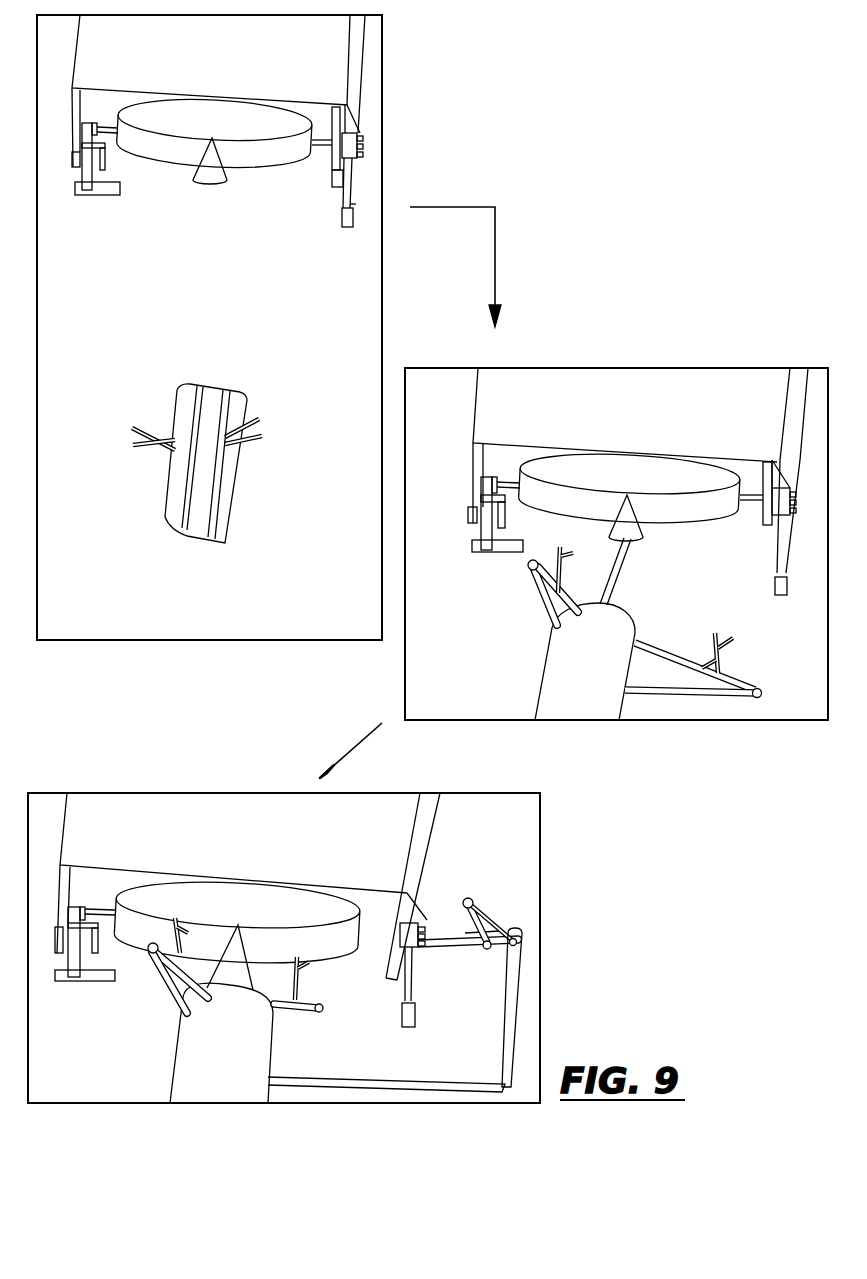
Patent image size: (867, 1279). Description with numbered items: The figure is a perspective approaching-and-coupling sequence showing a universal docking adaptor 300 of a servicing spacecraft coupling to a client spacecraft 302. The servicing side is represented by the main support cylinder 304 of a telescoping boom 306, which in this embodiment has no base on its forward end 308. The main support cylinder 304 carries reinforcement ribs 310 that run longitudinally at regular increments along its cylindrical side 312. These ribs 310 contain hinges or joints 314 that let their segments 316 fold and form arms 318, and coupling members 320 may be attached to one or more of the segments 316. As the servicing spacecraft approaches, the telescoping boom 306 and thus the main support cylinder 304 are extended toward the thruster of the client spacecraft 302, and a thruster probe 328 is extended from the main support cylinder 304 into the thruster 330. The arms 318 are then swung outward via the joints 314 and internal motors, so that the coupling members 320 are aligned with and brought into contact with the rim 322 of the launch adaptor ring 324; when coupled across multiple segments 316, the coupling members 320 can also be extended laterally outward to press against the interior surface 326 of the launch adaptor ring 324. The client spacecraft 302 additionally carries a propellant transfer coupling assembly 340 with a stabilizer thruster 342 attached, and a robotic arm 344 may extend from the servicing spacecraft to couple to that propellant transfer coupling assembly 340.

The universal docking adaptor 300 is at (364, 744).
The client spacecraft 302 is at (190, 76).
The main support cylinder 304 is at (215, 412).
The telescoping boom 306 is at (175, 487).
The forward end 308 is at (170, 460).
The ribs 310 is at (225, 462).
The cylindrical side 312 is at (168, 508).
The joints 314 is at (530, 568).
The segments 316 is at (650, 645).
The arms 318 is at (538, 597).
The coupling members 320 is at (558, 549).
The rim 322 is at (146, 930).
The launch adaptor ring 324 is at (439, 531).
The interior surface 326 is at (690, 512).
The thruster probe 328 is at (620, 562).
The thruster 330 is at (217, 983).
The propellant transfer coupling assembly 340 is at (413, 922).
The stabilizer thruster 342 is at (410, 1028).
The robotic arm 344 is at (467, 1088).